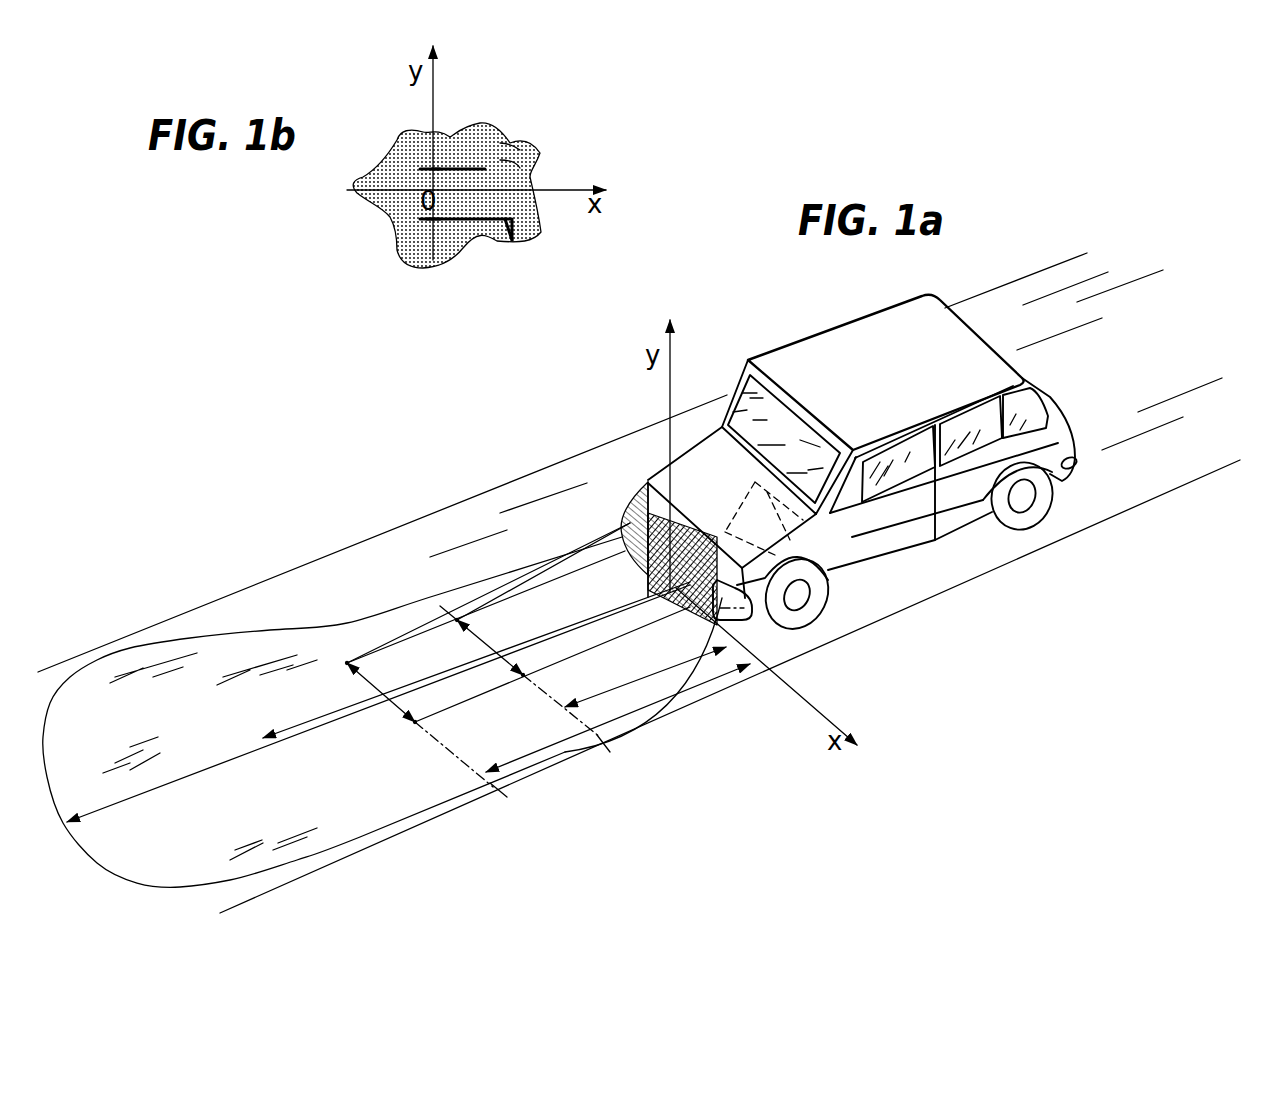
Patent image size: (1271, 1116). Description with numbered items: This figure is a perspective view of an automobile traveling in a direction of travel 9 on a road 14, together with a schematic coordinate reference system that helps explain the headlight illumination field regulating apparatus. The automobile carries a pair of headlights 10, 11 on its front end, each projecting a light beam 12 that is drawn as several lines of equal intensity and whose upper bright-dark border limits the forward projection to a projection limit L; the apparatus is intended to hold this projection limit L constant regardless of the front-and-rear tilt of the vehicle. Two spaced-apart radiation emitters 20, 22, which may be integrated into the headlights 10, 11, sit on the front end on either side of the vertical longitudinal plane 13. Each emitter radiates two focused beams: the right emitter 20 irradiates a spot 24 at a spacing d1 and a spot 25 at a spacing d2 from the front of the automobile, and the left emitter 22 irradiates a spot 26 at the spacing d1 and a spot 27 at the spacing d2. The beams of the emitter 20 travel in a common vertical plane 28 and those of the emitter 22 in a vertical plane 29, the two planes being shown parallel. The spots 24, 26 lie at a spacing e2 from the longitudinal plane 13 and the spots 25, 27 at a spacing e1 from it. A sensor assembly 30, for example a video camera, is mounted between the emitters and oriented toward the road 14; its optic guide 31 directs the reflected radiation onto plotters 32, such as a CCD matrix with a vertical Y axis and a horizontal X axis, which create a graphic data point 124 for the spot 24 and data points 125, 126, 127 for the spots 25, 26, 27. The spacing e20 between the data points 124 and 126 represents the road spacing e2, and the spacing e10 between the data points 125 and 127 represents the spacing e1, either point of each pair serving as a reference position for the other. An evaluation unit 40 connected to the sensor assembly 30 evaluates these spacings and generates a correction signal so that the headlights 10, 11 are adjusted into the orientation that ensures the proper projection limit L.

In FIG. 1A, the direction of travel 9 is at (305, 726).
In FIG. 1A, the headlight 10 is at (563, 510).
In FIG. 1A, the radiation emitter 20 is at (628, 512).
In FIG. 1A, the headlight 11 is at (802, 603).
In FIG. 1A, the radiation emitter 22 is at (722, 605).
In FIG. 1A, the light beam 12 is at (360, 807).
In FIG. 1A, the vertical longitudinal plane 13 is at (642, 632).
In FIG. 1A, the road 14 is at (243, 612).
In FIG. 1A, the spot 24 is at (455, 618).
In FIG. 1A, the spot 25 is at (347, 660).
In FIG. 1A, the spot 26 is at (522, 680).
In FIG. 1A, the spot 27 is at (413, 725).
In FIG. 1A, the vertical plane 28 is at (608, 556).
In FIG. 1A, the vertical plane 29 is at (727, 627).
In FIG. 1B, the sensor assembly 30 is at (546, 224).
In FIG. 1A, the sensor assembly 30 is at (718, 560).
In FIG. 1A, the optic guide 31 is at (800, 593).
In FIG. 1B, the plotters 32 is at (515, 166).
In FIG. 1A, the evaluation unit 40 is at (790, 517).
In FIG. 1B, the graphic data point 124 is at (513, 243).
In FIG. 1B, the data point 125 is at (510, 141).
In FIG. 1B, the data point 126 is at (430, 220).
In FIG. 1B, the data point 127 is at (430, 168).
In FIG. 1B, the spacing e10 is at (463, 167).
In FIG. 1B, the spacing e20 is at (470, 240).
In FIG. 1A, the spacing e1 is at (380, 692).
In FIG. 1A, the spacing e2 is at (453, 618).
In FIG. 1A, the spacing d1 is at (633, 687).
In FIG. 1A, the spacing d2 is at (547, 747).
In FIG. 1A, the projection limit L is at (193, 777).